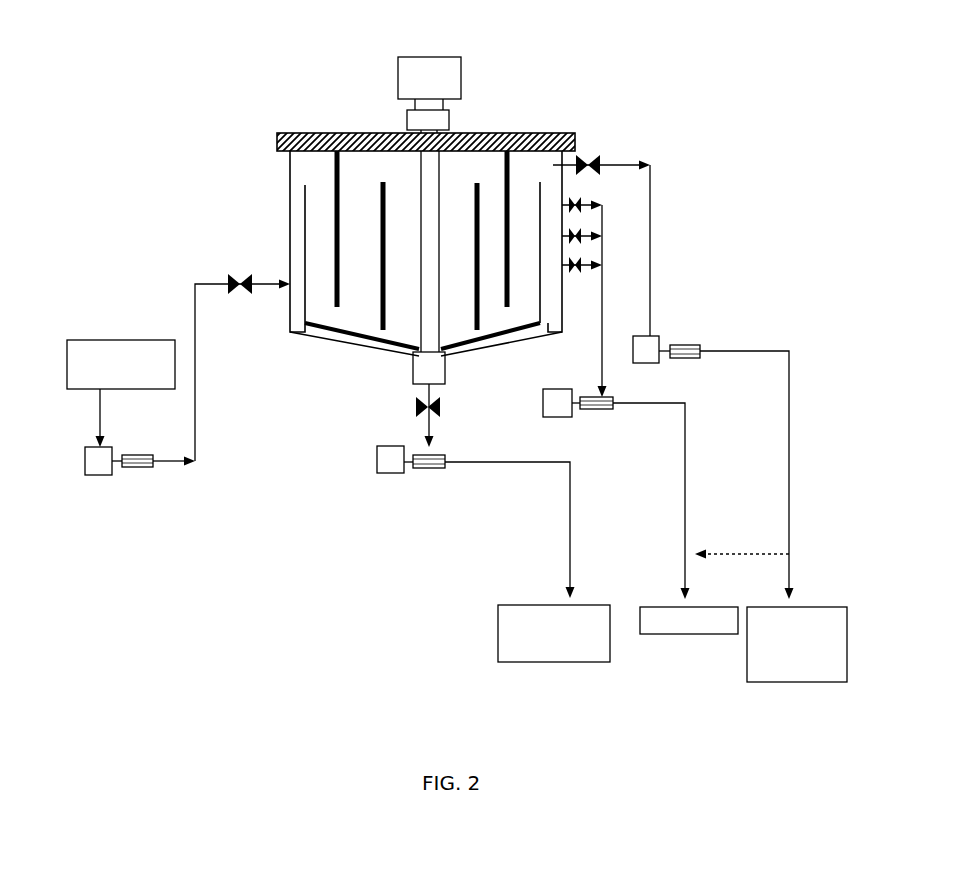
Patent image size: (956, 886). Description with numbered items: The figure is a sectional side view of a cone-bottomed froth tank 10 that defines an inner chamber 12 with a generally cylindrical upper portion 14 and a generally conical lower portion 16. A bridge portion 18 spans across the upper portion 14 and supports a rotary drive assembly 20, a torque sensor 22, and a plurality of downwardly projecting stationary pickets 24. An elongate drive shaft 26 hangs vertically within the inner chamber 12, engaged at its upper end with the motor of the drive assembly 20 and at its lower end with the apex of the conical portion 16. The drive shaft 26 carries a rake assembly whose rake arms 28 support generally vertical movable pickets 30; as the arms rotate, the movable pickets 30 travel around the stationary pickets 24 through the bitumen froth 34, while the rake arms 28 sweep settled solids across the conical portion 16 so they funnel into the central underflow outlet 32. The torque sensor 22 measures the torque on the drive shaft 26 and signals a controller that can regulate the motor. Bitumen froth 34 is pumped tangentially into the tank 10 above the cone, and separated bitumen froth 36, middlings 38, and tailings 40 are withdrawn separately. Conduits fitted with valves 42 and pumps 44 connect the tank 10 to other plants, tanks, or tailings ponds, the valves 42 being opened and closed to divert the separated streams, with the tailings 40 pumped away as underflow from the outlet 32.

The froth tank 10 is at (137, 64).
The inner chamber 12 is at (297, 207).
The cylindrical upper portion 14 is at (160, 205).
The conical lower portion 16 is at (421, 384).
The bridge portion 18 is at (277, 142).
The rotary drive assembly 20 is at (429, 78).
The torque sensor 22 is at (450, 112).
The stationary pickets 24 is at (334, 170).
The drive shaft 26 is at (430, 198).
The rake arms 28 is at (323, 335).
The movable pickets 30 is at (304, 248).
The central underflow outlet 32 is at (429, 368).
The bitumen froth 34 is at (115, 340).
The bitumen froth 36 is at (789, 462).
The middlings 38 is at (685, 462).
The tailings 40 is at (570, 513).
The valves 42 is at (237, 296).
The pumps 44 is at (85, 462).